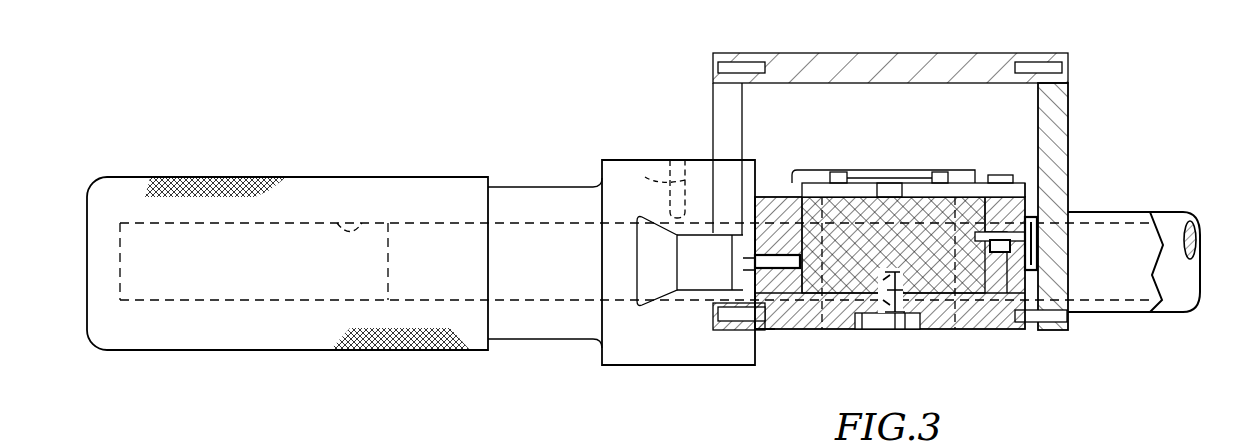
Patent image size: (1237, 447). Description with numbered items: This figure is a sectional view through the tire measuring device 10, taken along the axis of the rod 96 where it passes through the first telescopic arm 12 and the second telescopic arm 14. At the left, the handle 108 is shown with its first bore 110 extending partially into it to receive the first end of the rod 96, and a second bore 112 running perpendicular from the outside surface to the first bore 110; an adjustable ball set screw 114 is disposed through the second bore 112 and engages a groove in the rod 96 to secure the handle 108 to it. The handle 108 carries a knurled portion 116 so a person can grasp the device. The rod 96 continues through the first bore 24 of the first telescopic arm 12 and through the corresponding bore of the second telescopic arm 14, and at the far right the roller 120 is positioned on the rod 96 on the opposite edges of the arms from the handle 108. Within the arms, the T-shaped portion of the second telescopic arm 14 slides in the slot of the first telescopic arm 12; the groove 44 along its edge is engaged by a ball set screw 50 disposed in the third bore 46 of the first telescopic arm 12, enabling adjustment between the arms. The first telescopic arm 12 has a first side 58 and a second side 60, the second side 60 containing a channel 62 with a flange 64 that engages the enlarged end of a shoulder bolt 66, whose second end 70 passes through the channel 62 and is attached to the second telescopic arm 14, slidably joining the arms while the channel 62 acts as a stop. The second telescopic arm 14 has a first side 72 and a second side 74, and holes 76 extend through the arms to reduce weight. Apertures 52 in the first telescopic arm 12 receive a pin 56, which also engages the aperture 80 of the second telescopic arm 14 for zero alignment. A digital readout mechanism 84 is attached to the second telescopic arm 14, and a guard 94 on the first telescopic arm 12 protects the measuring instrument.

The tire measuring device 10 is at (560, 117).
The first telescopic arm 12 is at (757, 197).
The second telescopic arm 14 is at (980, 293).
The first bore 24 is at (986, 197).
The groove 44 is at (990, 297).
The third bore 46 is at (1017, 183).
The ball set screw 50 is at (1045, 198).
The apertures 52 is at (768, 197).
The pin 56 is at (668, 305).
The first side 58 is at (786, 197).
The second side 60 is at (772, 330).
The channel 62 is at (873, 329).
The flange 64 is at (867, 330).
The shoulder bolt 66 is at (910, 329).
The second end 70 is at (893, 329).
The first side 72 is at (922, 197).
The second side 74 is at (960, 292).
The holes 76 is at (832, 330).
The aperture 80 is at (790, 268).
The digital readout mechanism 84 is at (870, 172).
The guard 94 is at (932, 53).
The rod 96 is at (1175, 312).
The handle 108 is at (128, 177).
The first bore 110 is at (380, 228).
The second bore 112 is at (645, 177).
The adjustable ball set screw 114 is at (676, 160).
The knurled portion 116 is at (220, 178).
The roller 120 is at (1117, 212).